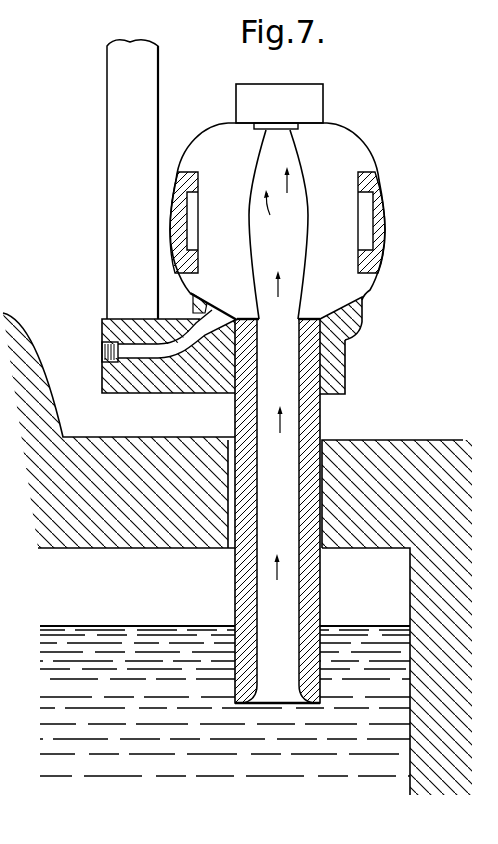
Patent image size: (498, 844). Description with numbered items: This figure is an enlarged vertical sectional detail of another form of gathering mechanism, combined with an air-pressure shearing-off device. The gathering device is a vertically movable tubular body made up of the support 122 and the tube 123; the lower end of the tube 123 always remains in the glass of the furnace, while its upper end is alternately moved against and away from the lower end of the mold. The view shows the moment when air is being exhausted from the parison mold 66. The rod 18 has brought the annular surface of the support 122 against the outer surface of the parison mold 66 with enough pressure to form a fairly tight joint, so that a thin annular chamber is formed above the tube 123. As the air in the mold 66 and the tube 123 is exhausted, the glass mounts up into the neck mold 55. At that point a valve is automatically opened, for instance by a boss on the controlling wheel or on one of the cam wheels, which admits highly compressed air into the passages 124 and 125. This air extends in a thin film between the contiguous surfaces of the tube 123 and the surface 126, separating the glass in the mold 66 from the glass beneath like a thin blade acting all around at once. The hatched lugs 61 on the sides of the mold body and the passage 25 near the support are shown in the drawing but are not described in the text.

The rod 18 is at (132, 179).
The neck mold 55 is at (279, 106).
The parison mold 66 is at (277, 221).
The guide lug 61 is at (383, 218).
The contiguous surface 126 is at (245, 319).
The air passage 125 is at (336, 312).
The support 122 is at (333, 365).
The air passage 124 is at (149, 353).
The air passage 25 is at (213, 311).
The tube 123 is at (277, 511).